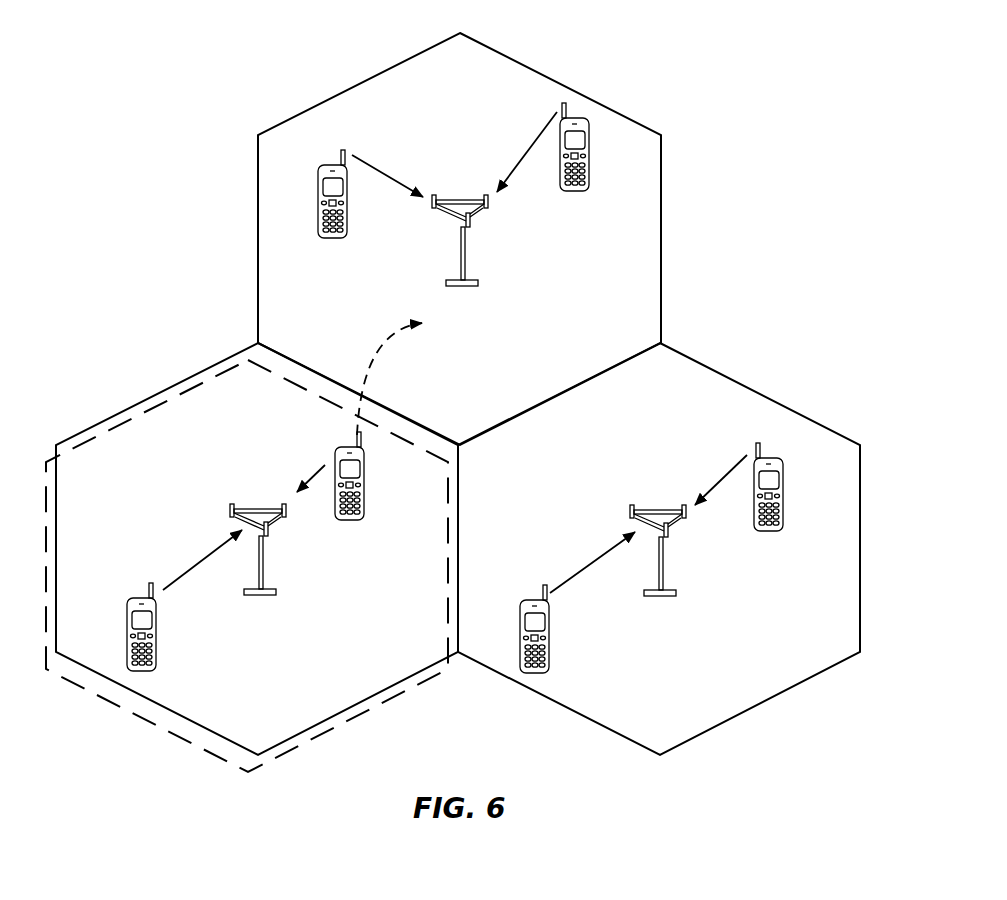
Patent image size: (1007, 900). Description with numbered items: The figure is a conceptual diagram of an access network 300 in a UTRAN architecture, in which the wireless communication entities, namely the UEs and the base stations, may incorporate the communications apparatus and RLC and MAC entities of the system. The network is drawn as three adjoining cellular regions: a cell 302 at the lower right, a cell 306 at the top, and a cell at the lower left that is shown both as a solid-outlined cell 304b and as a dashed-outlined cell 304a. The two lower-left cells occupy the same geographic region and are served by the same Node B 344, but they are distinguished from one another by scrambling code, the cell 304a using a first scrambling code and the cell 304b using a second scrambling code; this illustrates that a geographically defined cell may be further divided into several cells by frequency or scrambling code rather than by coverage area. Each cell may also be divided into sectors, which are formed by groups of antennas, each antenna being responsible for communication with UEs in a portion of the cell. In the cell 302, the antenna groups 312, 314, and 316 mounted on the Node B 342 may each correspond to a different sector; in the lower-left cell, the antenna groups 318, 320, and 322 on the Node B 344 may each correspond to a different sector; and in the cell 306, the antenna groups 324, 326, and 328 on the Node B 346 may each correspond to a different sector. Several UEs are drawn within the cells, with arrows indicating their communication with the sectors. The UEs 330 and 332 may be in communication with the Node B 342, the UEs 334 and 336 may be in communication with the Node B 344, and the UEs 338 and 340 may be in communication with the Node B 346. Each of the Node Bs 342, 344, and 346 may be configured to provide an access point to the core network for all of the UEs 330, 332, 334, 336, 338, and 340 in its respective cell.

The access network 300 is at (813, 31).
The cell 302 is at (760, 393).
The cell 304a is at (135, 403).
The cell 304b is at (200, 383).
The cell 306 is at (543, 73).
The antenna group 312 is at (630, 507).
The antenna group 314 is at (670, 533).
The antenna group 316 is at (688, 517).
The antenna group 318 is at (268, 533).
The antenna group 320 is at (287, 515).
The antenna group 322 is at (230, 507).
The antenna group 324 is at (432, 208).
The antenna group 326 is at (470, 225).
The antenna group 328 is at (488, 208).
The UE 330 is at (783, 480).
The UE 332 is at (520, 627).
The UE 334 is at (362, 470).
The UE 336 is at (127, 625).
The UE 338 is at (333, 238).
The UE 340 is at (583, 193).
The Node B 342 is at (661, 510).
The Node B 344 is at (259, 508).
The Node B 346 is at (463, 200).